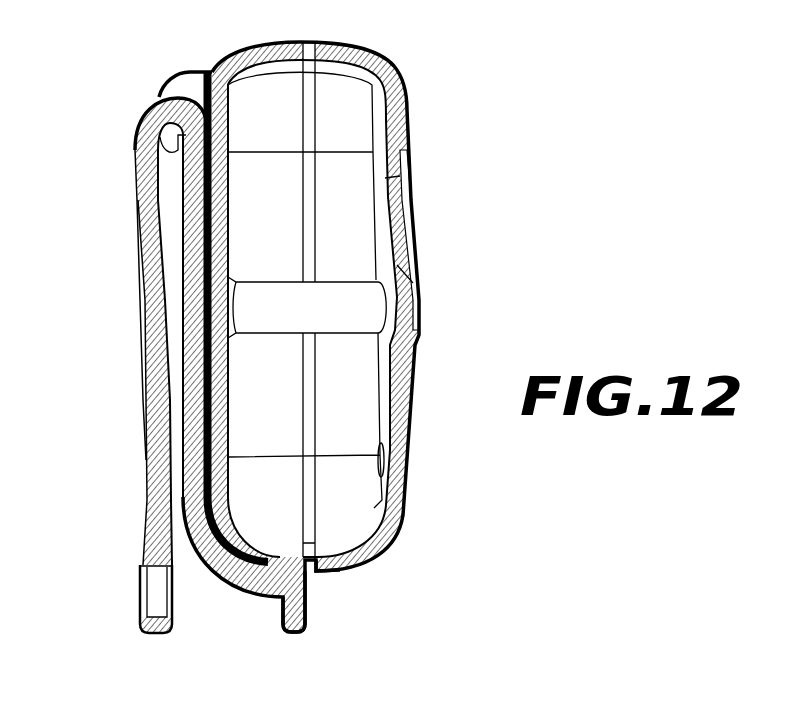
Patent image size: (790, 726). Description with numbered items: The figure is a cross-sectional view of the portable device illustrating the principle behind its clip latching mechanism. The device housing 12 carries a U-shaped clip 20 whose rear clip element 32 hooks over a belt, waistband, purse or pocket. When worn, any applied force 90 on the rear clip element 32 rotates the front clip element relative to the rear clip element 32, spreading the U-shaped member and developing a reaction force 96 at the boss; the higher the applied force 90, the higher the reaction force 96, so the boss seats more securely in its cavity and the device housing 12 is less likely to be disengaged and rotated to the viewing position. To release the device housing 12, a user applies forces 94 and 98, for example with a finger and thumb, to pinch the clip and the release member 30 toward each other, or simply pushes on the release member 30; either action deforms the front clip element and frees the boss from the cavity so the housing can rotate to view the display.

The device housing 12 is at (363, 53).
The clip 20 is at (147, 500).
The rear clip element 32 is at (142, 323).
The force 94 is at (135, 598).
The applied force 90 is at (178, 600).
The force 98 is at (317, 607).
The release member 30 is at (291, 634).
The reaction force 96 is at (298, 562).